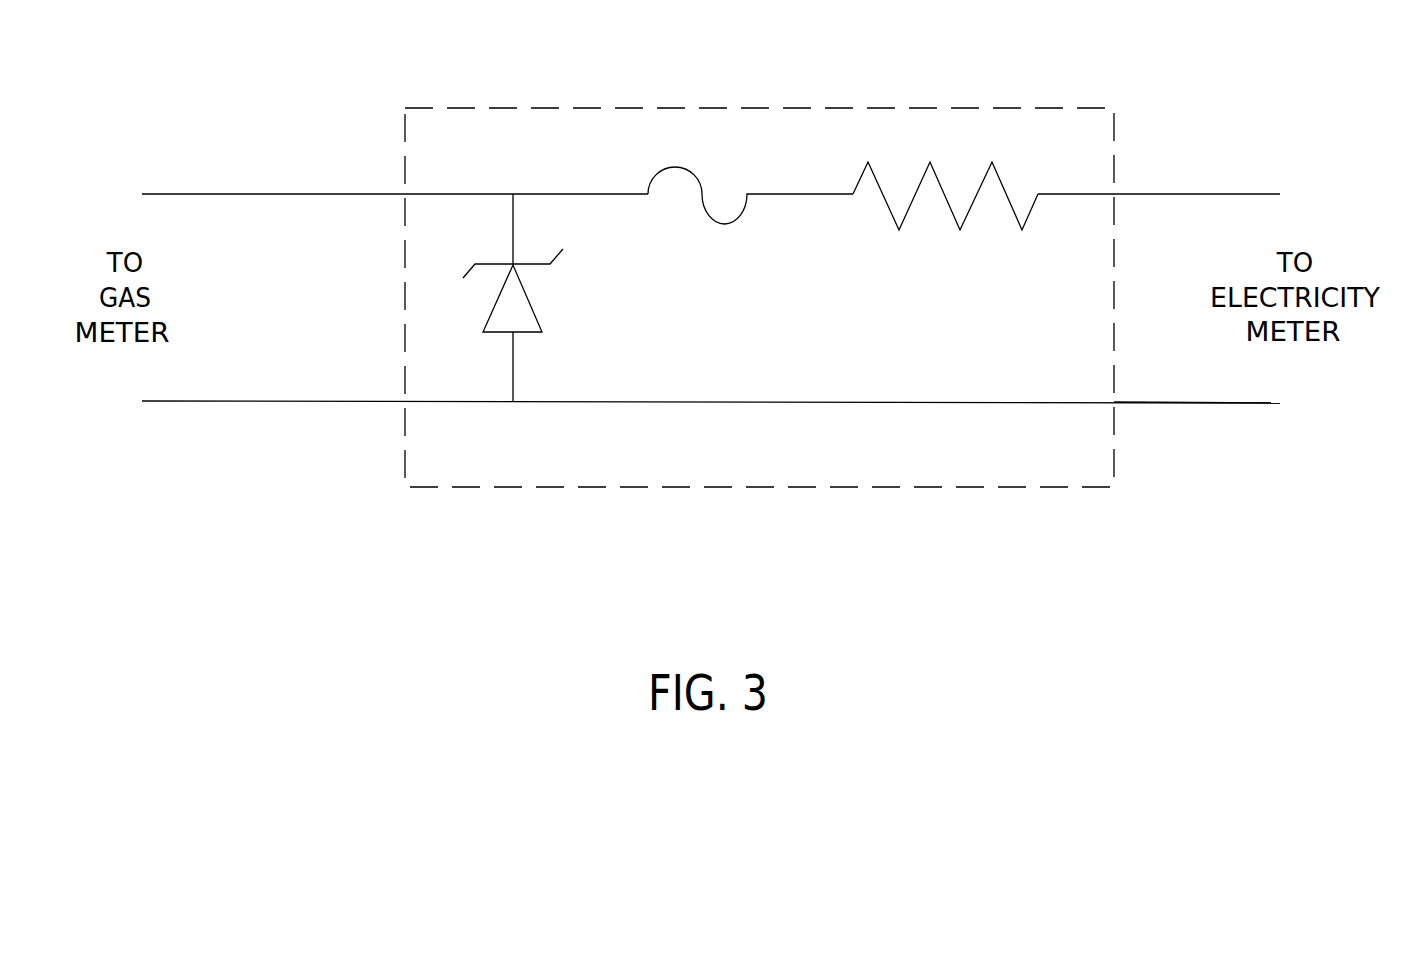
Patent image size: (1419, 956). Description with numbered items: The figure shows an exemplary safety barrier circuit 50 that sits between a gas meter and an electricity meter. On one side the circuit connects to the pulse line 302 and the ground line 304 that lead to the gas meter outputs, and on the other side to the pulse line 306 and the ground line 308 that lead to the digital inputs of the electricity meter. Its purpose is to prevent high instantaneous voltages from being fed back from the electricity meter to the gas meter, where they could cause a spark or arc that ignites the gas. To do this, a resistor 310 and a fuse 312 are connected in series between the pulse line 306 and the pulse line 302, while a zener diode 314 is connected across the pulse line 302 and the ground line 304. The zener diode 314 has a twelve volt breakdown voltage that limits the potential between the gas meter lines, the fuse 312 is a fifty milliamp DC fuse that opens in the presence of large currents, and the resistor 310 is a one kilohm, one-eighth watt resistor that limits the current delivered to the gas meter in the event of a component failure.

The safety barrier circuit 50 is at (890, 108).
The pulse line 302 is at (260, 194).
The ground line 304 is at (260, 401).
The pulse line 306 is at (1180, 194).
The ground line 308 is at (1178, 403).
The resistor 310 is at (960, 230).
The fuse 312 is at (723, 224).
The zener diode 314 is at (535, 312).